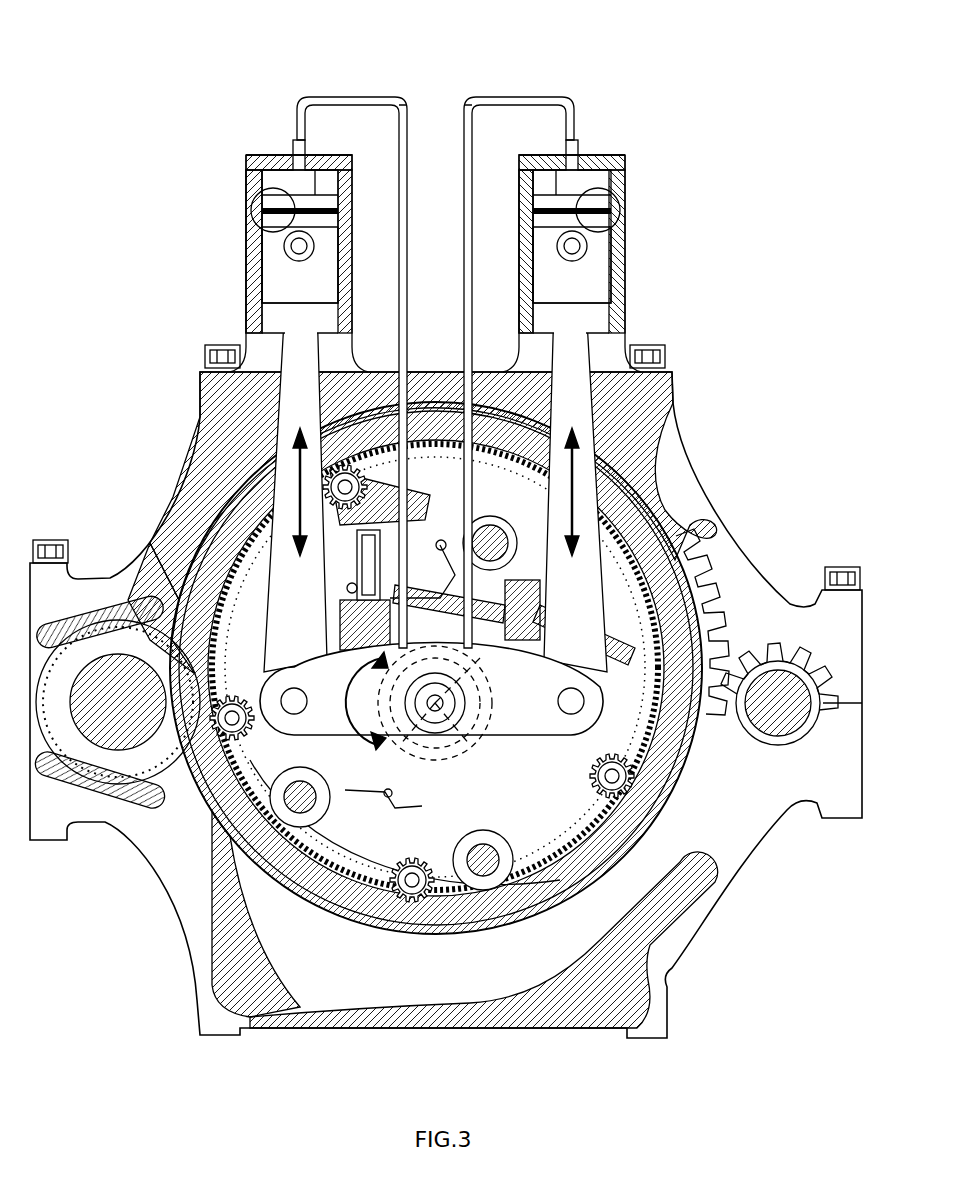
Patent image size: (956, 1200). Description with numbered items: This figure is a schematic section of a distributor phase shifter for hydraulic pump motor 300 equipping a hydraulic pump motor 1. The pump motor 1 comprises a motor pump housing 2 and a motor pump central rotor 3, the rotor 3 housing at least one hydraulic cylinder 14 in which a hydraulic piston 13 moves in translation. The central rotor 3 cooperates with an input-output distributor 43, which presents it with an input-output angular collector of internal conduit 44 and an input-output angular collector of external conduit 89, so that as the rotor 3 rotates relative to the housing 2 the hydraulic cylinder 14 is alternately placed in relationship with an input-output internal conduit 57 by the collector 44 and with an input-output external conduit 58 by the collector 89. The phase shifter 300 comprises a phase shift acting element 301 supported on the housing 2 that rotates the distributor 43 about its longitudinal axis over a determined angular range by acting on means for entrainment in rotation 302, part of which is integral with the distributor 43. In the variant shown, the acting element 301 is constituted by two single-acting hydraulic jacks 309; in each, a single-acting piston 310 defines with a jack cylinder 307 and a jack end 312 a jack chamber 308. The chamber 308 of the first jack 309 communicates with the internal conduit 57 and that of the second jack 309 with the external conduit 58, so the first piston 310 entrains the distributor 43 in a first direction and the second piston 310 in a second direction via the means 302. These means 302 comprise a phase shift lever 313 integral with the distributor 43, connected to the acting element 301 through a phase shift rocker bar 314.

The hydraulic pump motor 1 is at (800, 298).
The motor pump housing 2 is at (667, 465).
The motor pump central rotor 3 is at (480, 616).
The hydraulic piston 13 is at (287, 665).
The hydraulic cylinder 14 is at (452, 625).
The input-output distributor 43 is at (530, 625).
The input-output angular collector of internal conduit 44 is at (335, 733).
The input-output internal conduit 57 is at (350, 870).
The input-output external conduit 58 is at (434, 740).
The input-output angular collector of external conduit 89 is at (600, 930).
The distributor phase shifter for hydraulic pump motor 300 is at (192, 191).
The phase shift acting element 301 is at (242, 150).
The means for entrainment in rotation 302 is at (360, 623).
The jack cylinder 307 is at (278, 230).
The jack chamber 308 is at (289, 183).
The single-acting hydraulic jack 309 is at (347, 182).
The single-acting piston 310 is at (290, 282).
The jack end 312 is at (268, 232).
The phase shift lever 313 is at (282, 705).
The phase shift rocker bar 314 is at (297, 398).